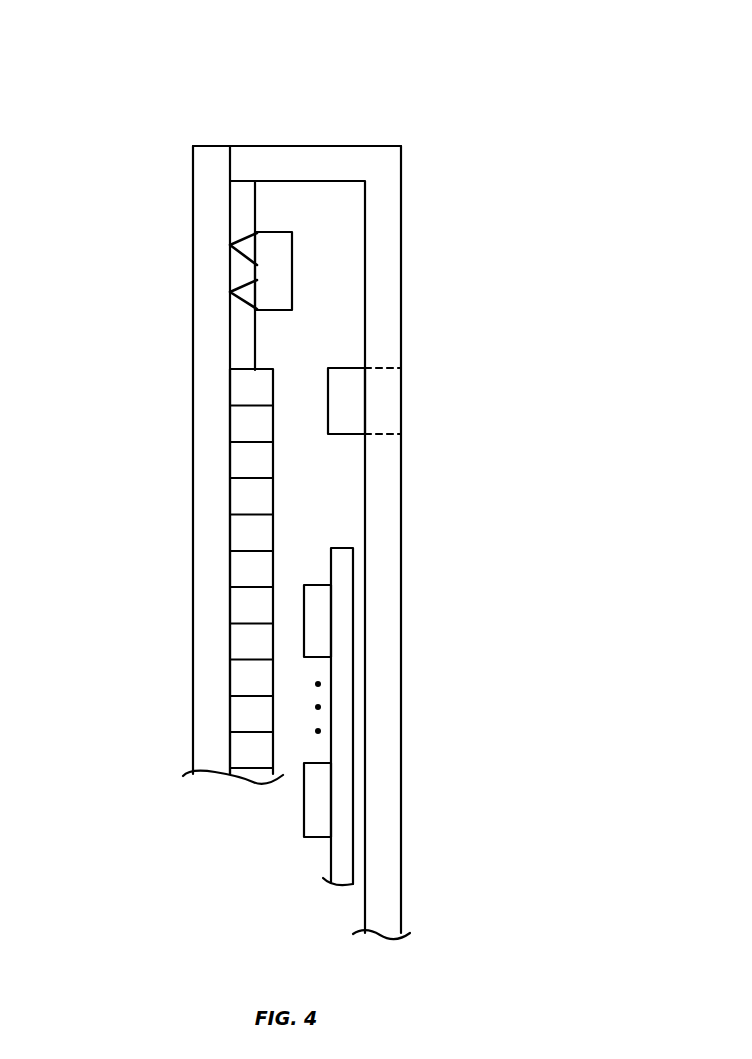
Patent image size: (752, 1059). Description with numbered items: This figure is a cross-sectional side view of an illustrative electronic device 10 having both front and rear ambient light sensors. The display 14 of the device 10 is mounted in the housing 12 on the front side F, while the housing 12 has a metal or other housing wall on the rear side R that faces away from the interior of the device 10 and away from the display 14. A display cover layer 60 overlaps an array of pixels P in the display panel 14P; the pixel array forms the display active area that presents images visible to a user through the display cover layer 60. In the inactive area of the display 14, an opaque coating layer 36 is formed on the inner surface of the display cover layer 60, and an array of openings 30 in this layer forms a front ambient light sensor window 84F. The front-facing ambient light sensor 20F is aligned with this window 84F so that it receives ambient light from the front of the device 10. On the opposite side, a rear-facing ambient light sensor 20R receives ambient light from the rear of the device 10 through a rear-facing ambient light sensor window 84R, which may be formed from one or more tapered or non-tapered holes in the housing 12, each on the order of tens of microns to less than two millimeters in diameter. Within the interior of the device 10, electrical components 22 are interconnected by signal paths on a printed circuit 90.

The electronic device 10 is at (417, 93).
The front side F is at (172, 188).
The rear side R is at (447, 270).
The display cover layer 60 is at (203, 643).
The display 14 is at (136, 519).
The housing 12 is at (387, 813).
The opaque coating layer 36 is at (240, 340).
The display panel 14P is at (253, 783).
The pixels P is at (260, 462).
The front-facing ambient light sensor 20F is at (275, 252).
The openings 30 is at (238, 294).
The ambient light sensor window 84F is at (178, 238).
The rear-facing ambient light sensor 20R is at (342, 373).
The rear-facing ambient light sensor window 84R is at (422, 367).
The printed circuit 90 is at (340, 732).
The electrical components 22 is at (320, 617).